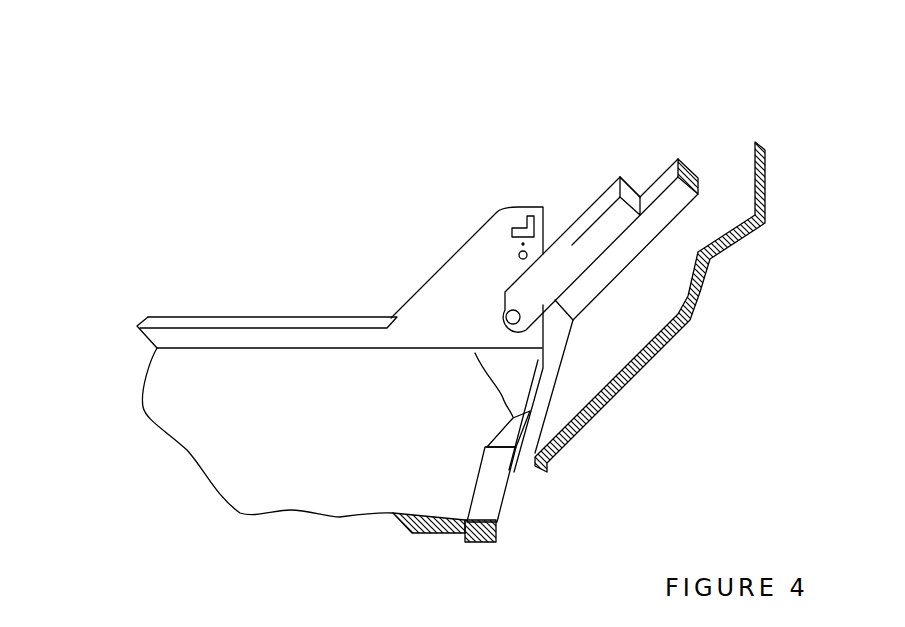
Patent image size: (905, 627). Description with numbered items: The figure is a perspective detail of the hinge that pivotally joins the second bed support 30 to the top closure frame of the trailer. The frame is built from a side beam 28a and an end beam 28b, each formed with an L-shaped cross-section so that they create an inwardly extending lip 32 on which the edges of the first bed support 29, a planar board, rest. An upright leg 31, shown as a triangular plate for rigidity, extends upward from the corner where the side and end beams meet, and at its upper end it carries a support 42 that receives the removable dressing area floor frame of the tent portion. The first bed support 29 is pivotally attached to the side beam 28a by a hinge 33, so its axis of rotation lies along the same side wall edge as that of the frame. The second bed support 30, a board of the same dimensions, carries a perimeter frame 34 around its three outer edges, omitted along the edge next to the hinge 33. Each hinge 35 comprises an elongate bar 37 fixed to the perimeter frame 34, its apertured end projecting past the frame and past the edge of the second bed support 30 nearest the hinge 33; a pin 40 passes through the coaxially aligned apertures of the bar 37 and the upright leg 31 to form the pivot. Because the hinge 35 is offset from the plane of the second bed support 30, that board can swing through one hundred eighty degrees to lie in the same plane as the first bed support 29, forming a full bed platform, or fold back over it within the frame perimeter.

The side beam 28a is at (493, 478).
The end beam 28b is at (223, 332).
The first bed support 29 is at (222, 423).
The second bed support 30 is at (655, 303).
The upright leg 31 is at (475, 287).
The lip 32 is at (466, 541).
The hinge 33 is at (512, 420).
The perimeter frame 34 is at (671, 180).
The hinge 35 is at (562, 218).
The elongate bar 37 is at (594, 230).
The pin 40 is at (506, 316).
The support 42 is at (523, 223).